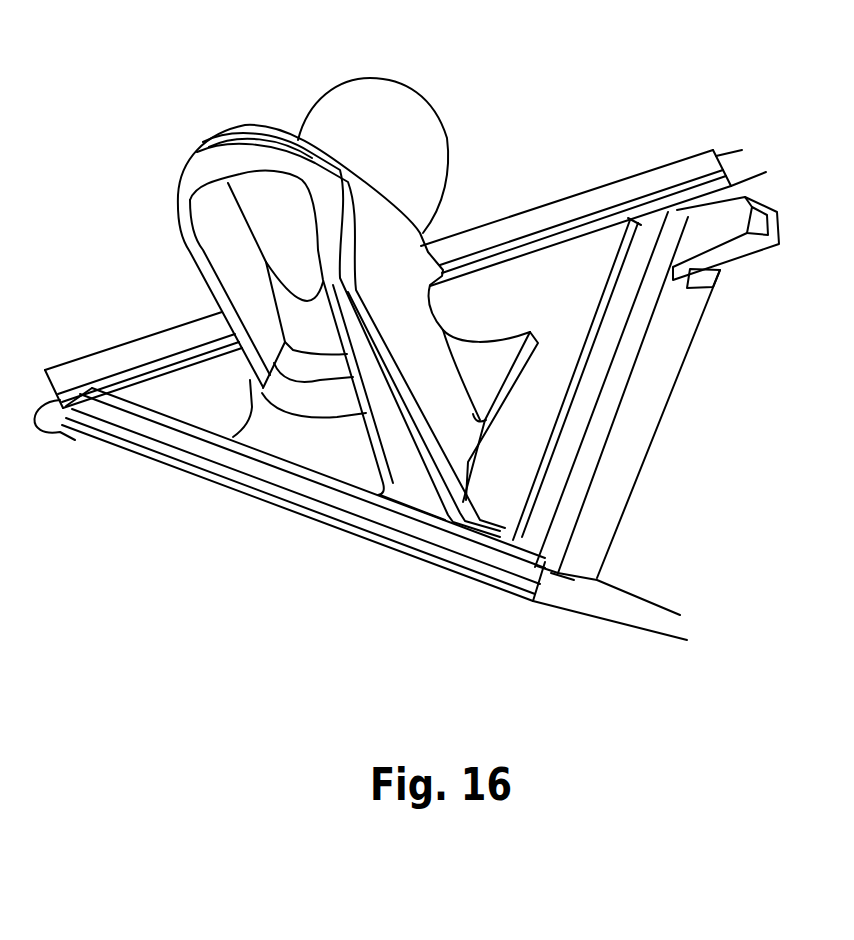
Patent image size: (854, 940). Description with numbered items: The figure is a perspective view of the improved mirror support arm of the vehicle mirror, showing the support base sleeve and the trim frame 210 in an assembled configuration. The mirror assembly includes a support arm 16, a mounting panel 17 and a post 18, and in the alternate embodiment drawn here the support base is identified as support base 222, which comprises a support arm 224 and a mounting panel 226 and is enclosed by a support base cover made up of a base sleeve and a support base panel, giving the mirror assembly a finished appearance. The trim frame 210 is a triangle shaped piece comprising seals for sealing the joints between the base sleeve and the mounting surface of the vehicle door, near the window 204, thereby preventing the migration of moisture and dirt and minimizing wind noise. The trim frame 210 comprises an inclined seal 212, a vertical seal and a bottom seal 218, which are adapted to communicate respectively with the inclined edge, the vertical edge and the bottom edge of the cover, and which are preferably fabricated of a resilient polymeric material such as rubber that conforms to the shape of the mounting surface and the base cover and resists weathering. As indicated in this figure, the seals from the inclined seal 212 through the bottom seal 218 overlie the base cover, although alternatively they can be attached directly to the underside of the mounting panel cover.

The support arm 16 is at (239, 116).
The mounting panel 17 is at (572, 257).
The post 18 is at (350, 118).
The window 204 is at (648, 540).
The trim frame 210 is at (96, 456).
The inclined seal 212 is at (120, 380).
The bottom seal 218 is at (192, 452).
The support base 222 is at (507, 266).
The support arm 224 is at (362, 217).
The mounting panel 226 is at (548, 373).